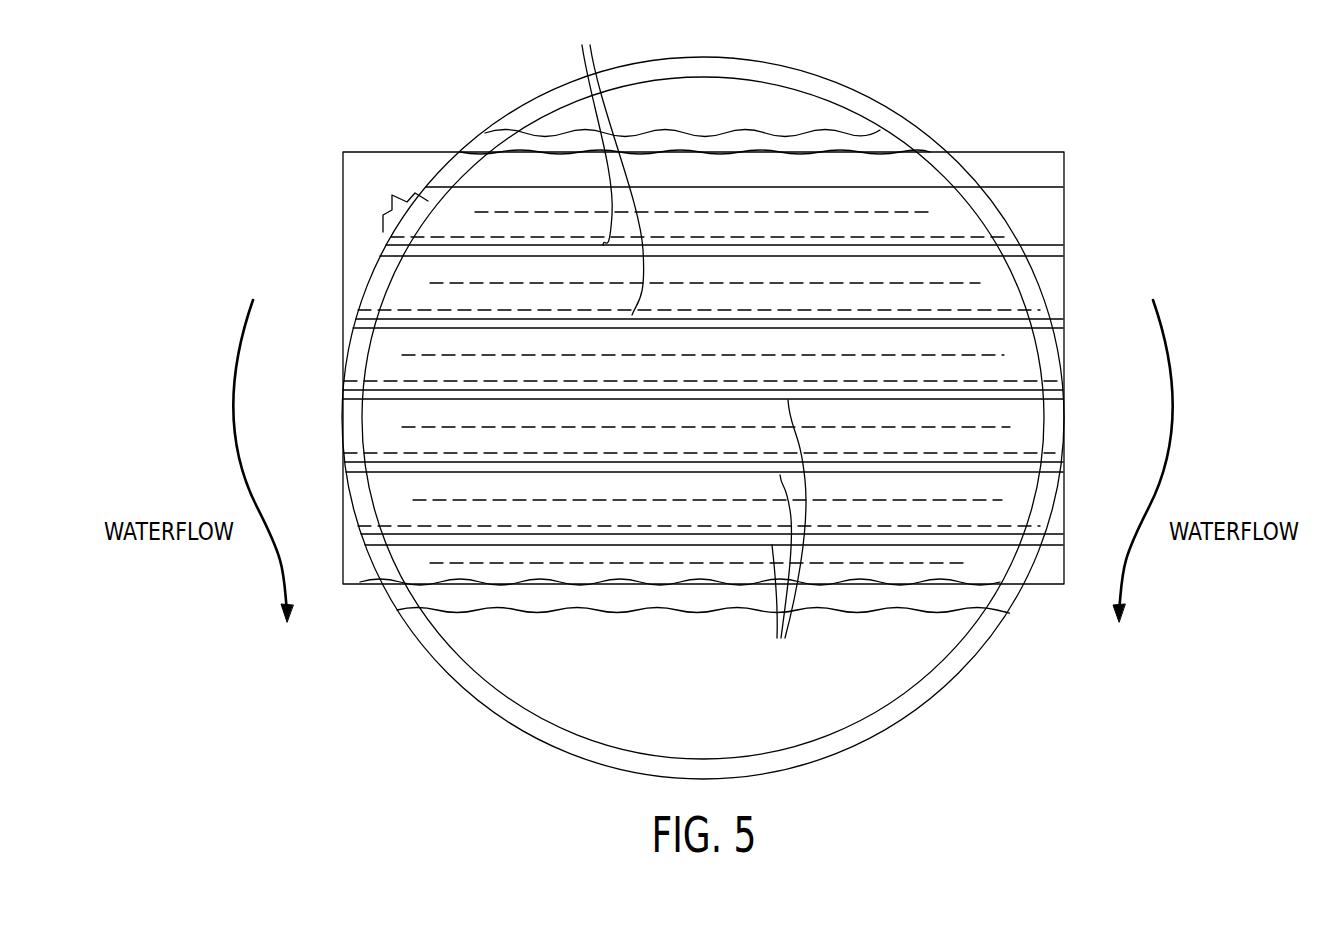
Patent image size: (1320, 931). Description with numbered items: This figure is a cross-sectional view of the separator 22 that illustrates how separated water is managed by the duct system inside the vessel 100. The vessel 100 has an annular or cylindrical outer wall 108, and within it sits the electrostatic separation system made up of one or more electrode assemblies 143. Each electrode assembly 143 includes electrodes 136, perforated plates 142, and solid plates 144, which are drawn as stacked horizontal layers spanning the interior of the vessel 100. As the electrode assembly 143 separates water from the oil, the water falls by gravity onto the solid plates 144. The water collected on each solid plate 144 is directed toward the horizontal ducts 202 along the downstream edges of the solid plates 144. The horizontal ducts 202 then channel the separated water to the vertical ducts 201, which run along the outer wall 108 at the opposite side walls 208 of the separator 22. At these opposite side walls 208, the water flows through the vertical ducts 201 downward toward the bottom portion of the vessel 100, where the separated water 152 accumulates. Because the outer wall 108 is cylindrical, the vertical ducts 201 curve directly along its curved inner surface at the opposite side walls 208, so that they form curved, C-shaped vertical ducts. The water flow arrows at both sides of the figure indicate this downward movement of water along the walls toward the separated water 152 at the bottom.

The separator 22 is at (960, 74).
The vessel 100 is at (838, 78).
The outer wall 108 is at (755, 58).
The electrodes 136 is at (473, 212).
The perforated plates 142 is at (391, 238).
The electrode assembly 143 is at (397, 198).
The solid plates 144 is at (978, 186).
The separated water 152 is at (719, 682).
The vertical ducts 201 is at (1012, 607).
The horizontal ducts 202 is at (686, 342).
The opposite side walls 208 is at (1065, 278).